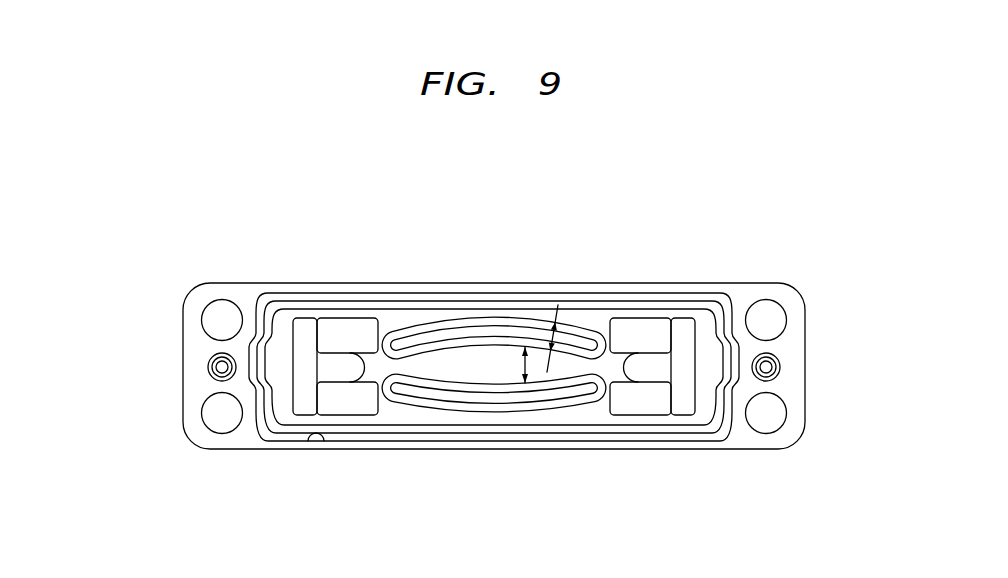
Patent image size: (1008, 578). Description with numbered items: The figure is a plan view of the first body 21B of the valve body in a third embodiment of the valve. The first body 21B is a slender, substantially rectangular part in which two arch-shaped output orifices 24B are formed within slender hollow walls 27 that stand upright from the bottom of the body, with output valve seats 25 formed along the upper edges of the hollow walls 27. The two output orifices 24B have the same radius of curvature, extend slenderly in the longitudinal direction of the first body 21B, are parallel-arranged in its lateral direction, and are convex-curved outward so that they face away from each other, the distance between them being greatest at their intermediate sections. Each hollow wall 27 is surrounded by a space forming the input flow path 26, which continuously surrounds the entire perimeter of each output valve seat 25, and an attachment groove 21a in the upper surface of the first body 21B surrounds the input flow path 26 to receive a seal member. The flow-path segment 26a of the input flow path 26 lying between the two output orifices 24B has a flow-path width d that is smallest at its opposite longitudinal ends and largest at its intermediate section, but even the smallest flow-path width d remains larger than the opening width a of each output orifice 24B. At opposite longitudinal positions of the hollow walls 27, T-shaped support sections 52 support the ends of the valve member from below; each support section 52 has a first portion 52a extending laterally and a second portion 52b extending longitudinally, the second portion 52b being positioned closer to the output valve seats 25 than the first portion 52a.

The attachment groove 21a is at (312, 436).
The first body 21B is at (593, 293).
The arch-shaped output orifice 24B is at (476, 377).
The output valve seat 25 is at (476, 377).
The input flow path 26 is at (485, 377).
The flow-path segment 26a is at (487, 368).
The hollow wall 27 is at (488, 320).
The support section 52 is at (501, 280).
The first portion 52a is at (308, 329).
The second portion 52b is at (348, 367).
The flow-path width d is at (525, 366).
The opening width a is at (542, 333).